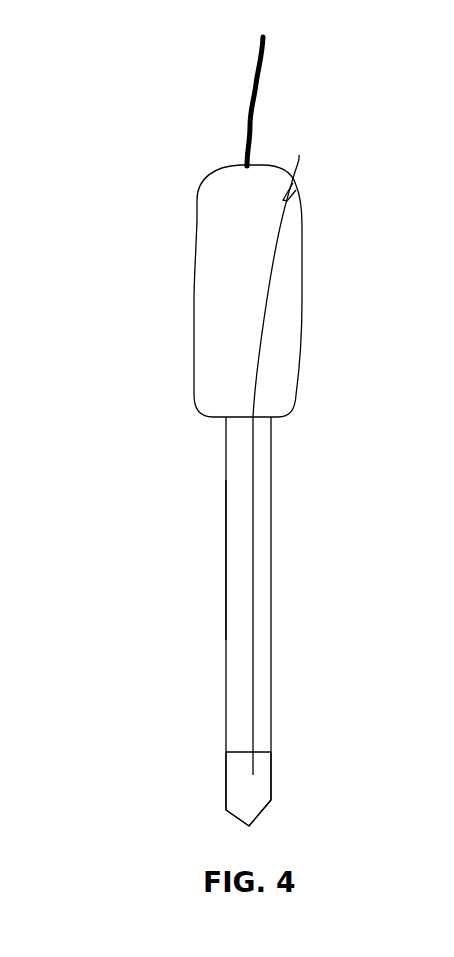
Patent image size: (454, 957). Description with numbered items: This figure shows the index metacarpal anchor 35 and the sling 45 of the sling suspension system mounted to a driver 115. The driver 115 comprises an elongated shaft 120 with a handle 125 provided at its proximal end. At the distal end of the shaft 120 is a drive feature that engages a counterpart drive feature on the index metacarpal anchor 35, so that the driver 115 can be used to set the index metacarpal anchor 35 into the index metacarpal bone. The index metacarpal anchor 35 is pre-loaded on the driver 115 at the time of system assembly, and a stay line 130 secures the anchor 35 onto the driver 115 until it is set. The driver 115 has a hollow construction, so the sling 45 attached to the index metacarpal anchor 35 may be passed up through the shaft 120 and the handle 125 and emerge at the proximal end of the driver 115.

The sling 45 is at (266, 43).
The handle 125 is at (196, 298).
The stay line 130 is at (260, 340).
The driver 115 is at (187, 513).
The shaft 120 is at (225, 565).
The index metacarpal anchor 35 is at (223, 772).